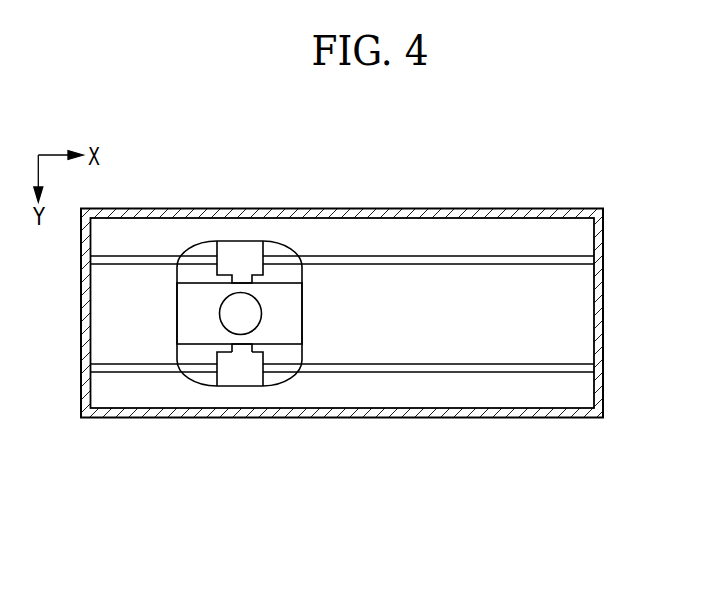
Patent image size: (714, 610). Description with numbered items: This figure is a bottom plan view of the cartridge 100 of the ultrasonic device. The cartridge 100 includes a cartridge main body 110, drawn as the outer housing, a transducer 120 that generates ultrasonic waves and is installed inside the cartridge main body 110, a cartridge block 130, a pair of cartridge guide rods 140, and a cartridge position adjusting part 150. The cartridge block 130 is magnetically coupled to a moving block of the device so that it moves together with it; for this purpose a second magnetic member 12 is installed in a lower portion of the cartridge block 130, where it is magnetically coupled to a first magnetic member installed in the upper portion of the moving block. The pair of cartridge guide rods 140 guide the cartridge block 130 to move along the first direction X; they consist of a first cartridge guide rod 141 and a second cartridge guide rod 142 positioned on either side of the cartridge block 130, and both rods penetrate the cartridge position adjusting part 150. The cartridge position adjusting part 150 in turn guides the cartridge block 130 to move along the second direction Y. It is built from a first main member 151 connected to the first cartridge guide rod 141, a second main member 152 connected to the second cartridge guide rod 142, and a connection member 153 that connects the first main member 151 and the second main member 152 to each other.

The cartridge 100 is at (540, 450).
The cartridge main body 110 is at (600, 233).
The transducer 120 is at (210, 247).
The cartridge block 130 is at (293, 292).
The second magnetic member 12 is at (229, 314).
The pair of cartridge guide rods 140 is at (400, 314).
The first cartridge guide rod 141 is at (555, 260).
The second cartridge guide rod 142 is at (555, 368).
The cartridge position adjusting part 150 is at (252, 376).
The first main member 151 is at (253, 260).
The second main member 152 is at (245, 378).
The connection member 153 is at (220, 350).